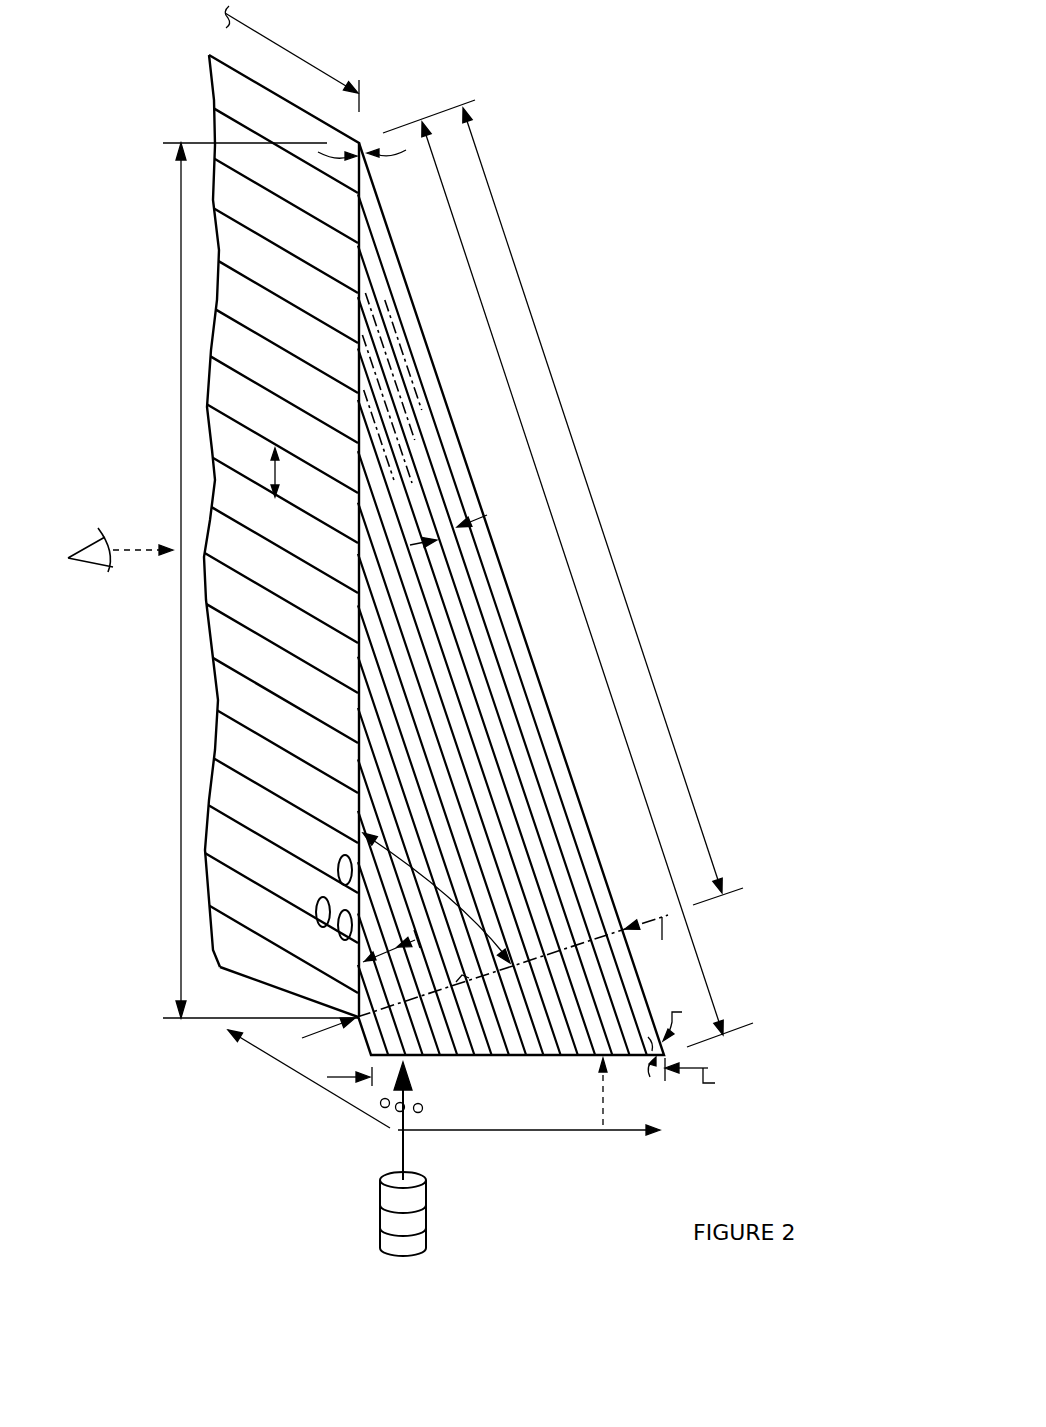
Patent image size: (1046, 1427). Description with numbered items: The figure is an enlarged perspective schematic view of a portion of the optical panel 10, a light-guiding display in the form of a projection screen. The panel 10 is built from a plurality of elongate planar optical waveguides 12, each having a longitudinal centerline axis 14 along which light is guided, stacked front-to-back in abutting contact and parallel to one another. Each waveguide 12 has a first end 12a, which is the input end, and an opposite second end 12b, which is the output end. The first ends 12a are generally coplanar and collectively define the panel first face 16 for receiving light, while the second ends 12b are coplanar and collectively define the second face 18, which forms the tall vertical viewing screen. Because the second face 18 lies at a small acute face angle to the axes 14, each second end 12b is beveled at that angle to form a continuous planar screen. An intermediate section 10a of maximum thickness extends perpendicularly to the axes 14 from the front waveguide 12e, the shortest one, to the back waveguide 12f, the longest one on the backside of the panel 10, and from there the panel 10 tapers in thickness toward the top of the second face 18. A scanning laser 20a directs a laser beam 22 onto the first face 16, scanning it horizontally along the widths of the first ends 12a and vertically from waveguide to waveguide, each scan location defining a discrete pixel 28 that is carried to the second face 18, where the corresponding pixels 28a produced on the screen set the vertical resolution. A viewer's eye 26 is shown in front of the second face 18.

The optical panel 10 is at (162, 268).
The intermediate section 10a is at (584, 943).
The optical waveguides 12 is at (497, 608).
The first end 12a is at (525, 1057).
The second end 12b is at (308, 337).
The front waveguide 12e is at (357, 983).
The back waveguide 12f is at (528, 637).
The longitudinal centerline axis 14 is at (393, 365).
The first face 16 is at (470, 1068).
The second face 18 is at (232, 755).
The scanning laser 20a is at (428, 1207).
The laser beam 22 is at (407, 1153).
The viewer eye 26 is at (85, 560).
The pixel 28 is at (414, 1111).
The pixels 28a is at (318, 908).